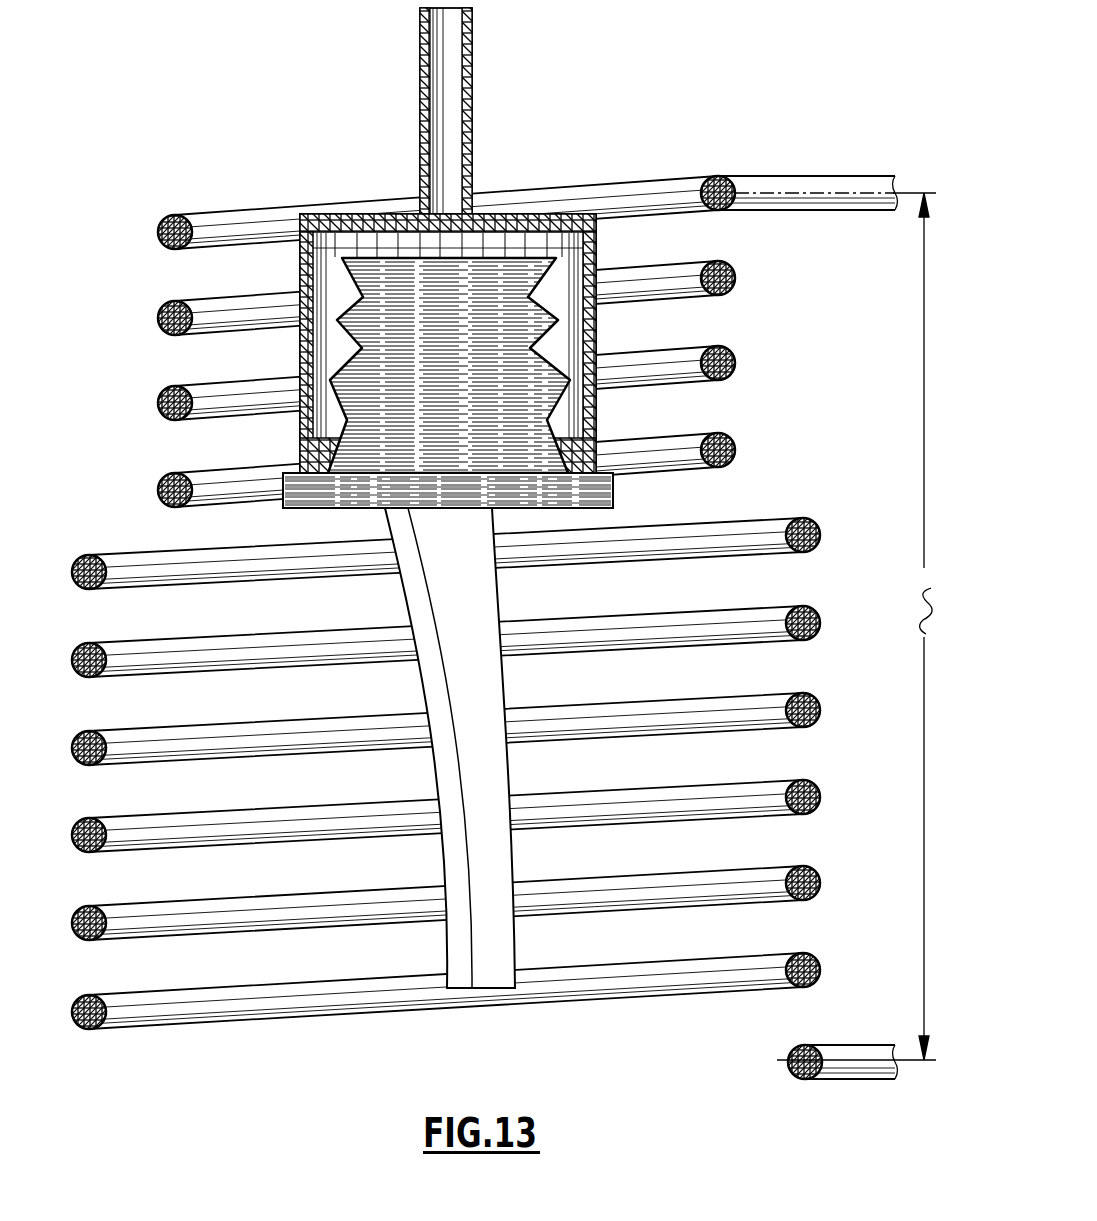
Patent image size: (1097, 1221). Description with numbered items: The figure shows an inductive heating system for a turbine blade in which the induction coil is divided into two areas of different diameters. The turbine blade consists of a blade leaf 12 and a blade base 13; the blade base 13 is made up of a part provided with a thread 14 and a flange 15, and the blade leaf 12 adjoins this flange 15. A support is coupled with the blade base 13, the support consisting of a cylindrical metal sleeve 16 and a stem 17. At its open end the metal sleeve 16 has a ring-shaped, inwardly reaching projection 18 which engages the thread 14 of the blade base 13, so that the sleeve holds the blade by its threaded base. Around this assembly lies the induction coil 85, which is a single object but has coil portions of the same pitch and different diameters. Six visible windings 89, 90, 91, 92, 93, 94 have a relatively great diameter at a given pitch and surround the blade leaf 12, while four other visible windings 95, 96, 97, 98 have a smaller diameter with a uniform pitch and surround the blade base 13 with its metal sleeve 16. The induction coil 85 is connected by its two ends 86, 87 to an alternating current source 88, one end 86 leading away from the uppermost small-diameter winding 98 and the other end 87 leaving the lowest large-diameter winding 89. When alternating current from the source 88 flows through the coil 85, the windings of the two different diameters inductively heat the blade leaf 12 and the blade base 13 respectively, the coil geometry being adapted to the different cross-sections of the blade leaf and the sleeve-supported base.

The blade leaf 12 is at (500, 771).
The blade base 13 is at (519, 232).
The thread 14 is at (357, 256).
The flange 15 is at (313, 495).
The cylindrical metal sleeve 16 is at (597, 243).
The stem 17 is at (473, 85).
The ring-shaped inwardly reaching projection 18 is at (554, 443).
The induction coil 85 is at (472, 612).
The coil end 86 is at (816, 184).
The coil end 87 is at (848, 1074).
The alternating current source 88 is at (915, 605).
The winding 89 is at (821, 972).
The winding 90 is at (821, 885).
The winding 91 is at (821, 799).
The winding 92 is at (821, 712).
The winding 93 is at (821, 625).
The winding 94 is at (821, 530).
The winding 95 is at (736, 452).
The winding 96 is at (736, 365).
The winding 97 is at (736, 280).
The winding 98 is at (715, 176).